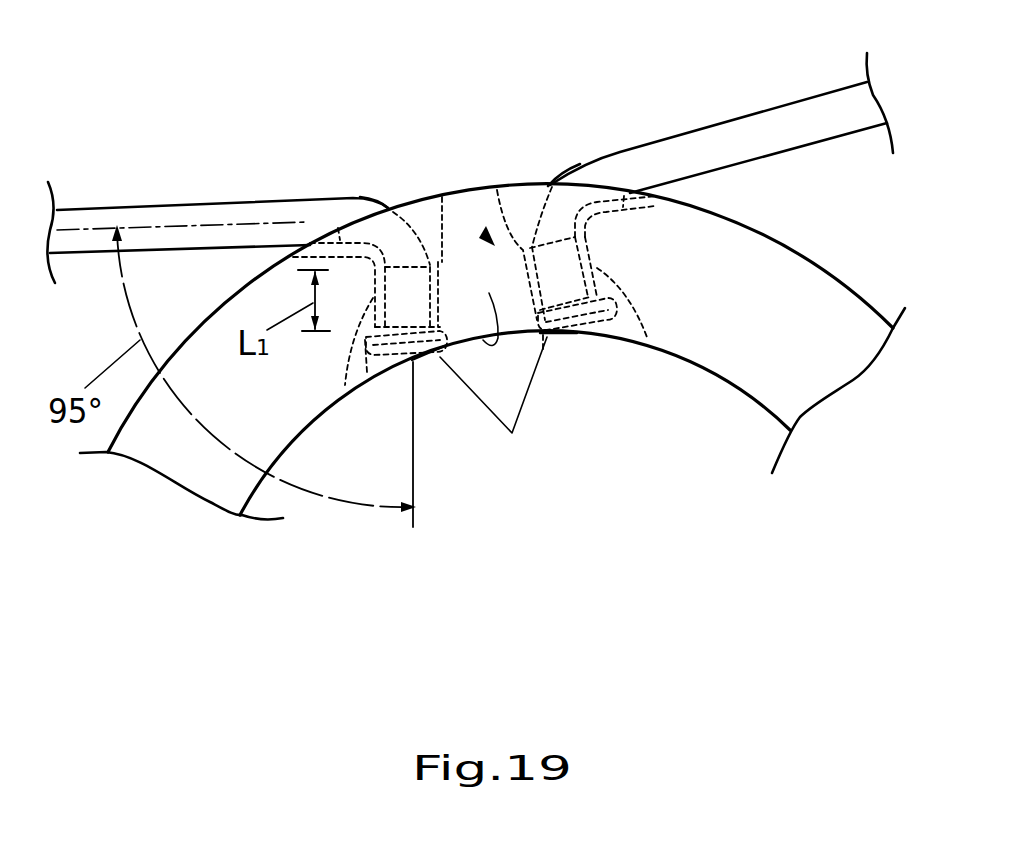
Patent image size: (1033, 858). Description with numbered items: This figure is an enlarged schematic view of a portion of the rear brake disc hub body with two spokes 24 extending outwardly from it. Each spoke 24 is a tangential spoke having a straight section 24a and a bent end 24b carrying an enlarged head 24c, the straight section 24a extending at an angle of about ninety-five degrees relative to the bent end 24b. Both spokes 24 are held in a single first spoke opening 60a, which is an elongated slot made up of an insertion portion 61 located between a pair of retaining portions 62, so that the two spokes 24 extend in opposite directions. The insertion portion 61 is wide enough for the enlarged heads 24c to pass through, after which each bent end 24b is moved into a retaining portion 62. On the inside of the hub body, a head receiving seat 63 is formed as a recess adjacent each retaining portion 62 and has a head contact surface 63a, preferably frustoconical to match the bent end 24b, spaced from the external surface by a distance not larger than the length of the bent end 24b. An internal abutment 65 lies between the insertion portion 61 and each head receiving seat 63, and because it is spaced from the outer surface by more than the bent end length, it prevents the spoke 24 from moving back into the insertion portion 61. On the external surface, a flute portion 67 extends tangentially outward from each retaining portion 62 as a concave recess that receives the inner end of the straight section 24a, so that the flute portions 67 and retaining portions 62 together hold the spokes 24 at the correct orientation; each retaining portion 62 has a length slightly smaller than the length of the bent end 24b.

The spoke 24 is at (200, 203).
The straight section 24a is at (97, 205).
The bent end 24b is at (382, 203).
The enlarged head 24c is at (494, 406).
The first spoke opening 60a is at (490, 238).
The insertion portion 61 is at (457, 247).
The retaining portion 62 is at (345, 385).
The head receiving seat 63 is at (382, 362).
The head contact surface 63a is at (427, 358).
The internal abutment 65 is at (485, 302).
The flute portion 67 is at (338, 228).